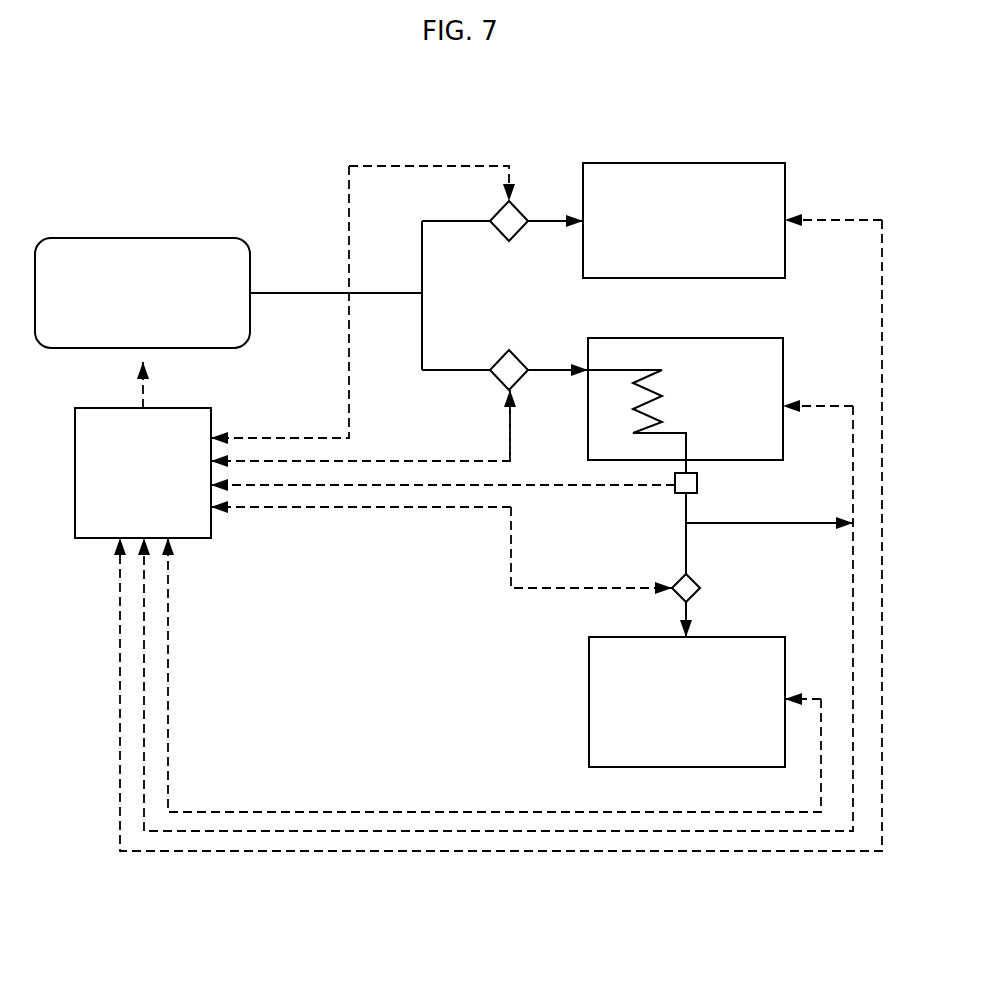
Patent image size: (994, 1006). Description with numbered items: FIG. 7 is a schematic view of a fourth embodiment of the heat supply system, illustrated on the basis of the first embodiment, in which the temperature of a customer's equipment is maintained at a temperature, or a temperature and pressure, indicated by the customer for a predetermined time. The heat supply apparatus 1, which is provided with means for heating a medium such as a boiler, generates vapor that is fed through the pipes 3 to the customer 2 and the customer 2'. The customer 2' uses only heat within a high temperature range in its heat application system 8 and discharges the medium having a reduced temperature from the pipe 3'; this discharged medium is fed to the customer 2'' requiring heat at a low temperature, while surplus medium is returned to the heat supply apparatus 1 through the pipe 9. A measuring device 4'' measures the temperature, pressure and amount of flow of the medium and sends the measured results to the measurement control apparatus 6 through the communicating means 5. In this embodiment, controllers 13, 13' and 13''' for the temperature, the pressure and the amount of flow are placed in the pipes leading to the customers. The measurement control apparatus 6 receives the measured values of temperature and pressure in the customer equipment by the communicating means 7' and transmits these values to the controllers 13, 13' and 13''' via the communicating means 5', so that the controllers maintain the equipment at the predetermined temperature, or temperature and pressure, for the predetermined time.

The heat supply apparatus 1 is at (163, 238).
The customer 2 is at (684, 185).
The customer 2' is at (721, 398).
The customer 2'' is at (653, 702).
The pipes 3 is at (370, 295).
The pipe 3' is at (726, 533).
The measuring device 4'' is at (724, 479).
The communicating means 5 is at (443, 535).
The communicating means 5' is at (441, 385).
The measurement control apparatus 6 is at (92, 538).
The communicating means 7' is at (501, 588).
The heat application system 8 is at (660, 390).
The pipe 9 is at (810, 523).
The controller 13 is at (536, 247).
The controller 13' is at (539, 346).
The third exhaust valve 13''' is at (739, 605).